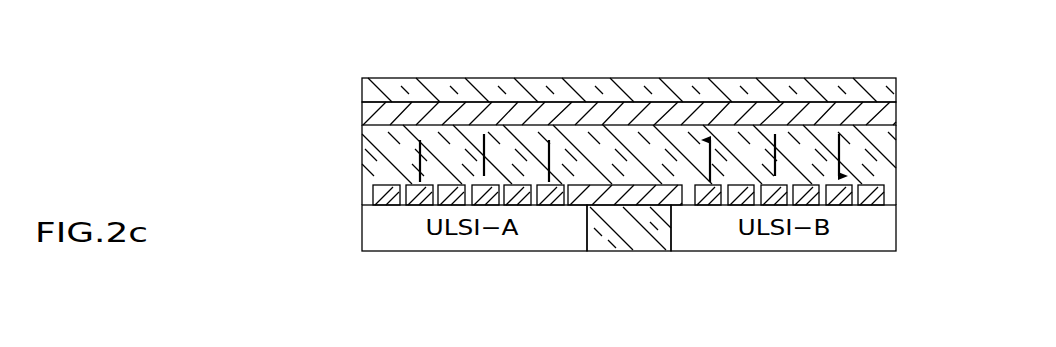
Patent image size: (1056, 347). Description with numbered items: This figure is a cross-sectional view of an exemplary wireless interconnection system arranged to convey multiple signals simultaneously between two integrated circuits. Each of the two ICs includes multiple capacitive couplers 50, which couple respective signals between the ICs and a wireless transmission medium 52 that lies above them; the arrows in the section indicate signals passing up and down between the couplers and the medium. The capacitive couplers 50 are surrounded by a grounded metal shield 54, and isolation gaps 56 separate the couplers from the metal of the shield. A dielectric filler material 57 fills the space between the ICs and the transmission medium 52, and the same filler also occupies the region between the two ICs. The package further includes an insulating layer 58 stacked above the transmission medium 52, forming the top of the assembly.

The capacitive coupler 50 is at (410, 184).
The wireless transmission medium 52 is at (362, 115).
The grounded metal shield 54 is at (388, 184).
The isolation gap 56 is at (567, 210).
The dielectric filler material 57 is at (887, 147).
The insulating layer 58 is at (362, 93).